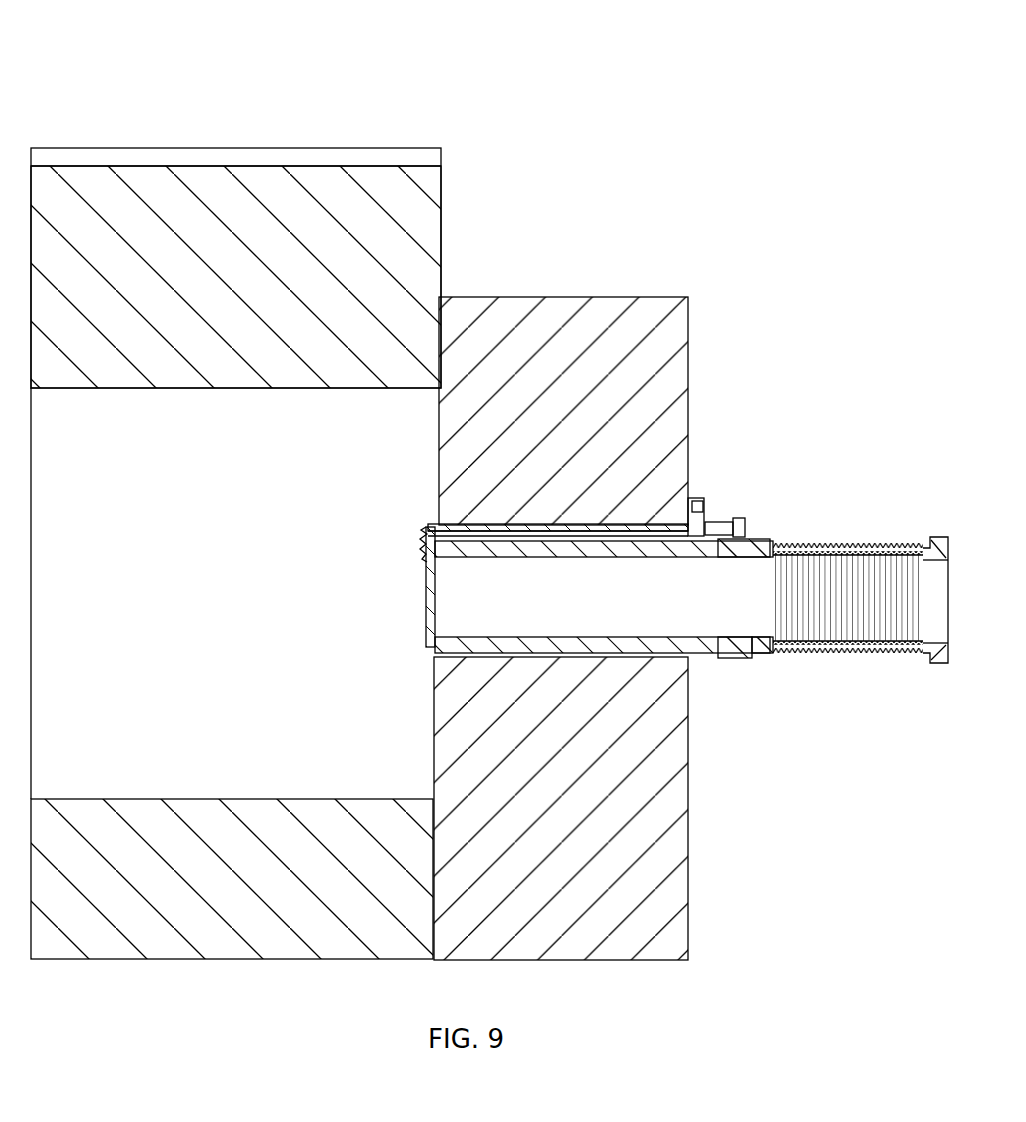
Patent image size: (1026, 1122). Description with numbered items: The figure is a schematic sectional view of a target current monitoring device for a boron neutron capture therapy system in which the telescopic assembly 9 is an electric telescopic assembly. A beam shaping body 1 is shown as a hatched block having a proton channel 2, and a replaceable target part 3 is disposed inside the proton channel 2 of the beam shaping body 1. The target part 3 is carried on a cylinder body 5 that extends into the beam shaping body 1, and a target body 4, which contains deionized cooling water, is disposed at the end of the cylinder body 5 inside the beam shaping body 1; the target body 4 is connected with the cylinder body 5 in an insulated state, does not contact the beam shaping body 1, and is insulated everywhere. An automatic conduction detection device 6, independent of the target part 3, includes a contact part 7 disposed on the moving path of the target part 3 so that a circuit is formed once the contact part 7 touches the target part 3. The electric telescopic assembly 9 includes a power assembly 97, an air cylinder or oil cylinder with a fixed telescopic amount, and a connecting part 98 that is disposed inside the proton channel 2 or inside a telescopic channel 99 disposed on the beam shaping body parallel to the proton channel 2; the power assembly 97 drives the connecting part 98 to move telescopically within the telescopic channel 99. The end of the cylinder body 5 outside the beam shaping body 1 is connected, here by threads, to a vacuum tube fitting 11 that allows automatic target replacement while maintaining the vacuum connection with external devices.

The beam shaping body 1 is at (340, 166).
The proton channel 2 is at (647, 660).
The target part 3 is at (708, 660).
The target body 4 is at (428, 592).
The cylinder body 5 is at (428, 650).
The automatic conduction detection device 6 is at (561, 628).
The contact part 7 is at (424, 552).
The telescopic assembly 9 is at (769, 442).
The vacuum tube fitting 11 is at (849, 546).
The power assembly 97 is at (745, 521).
The connecting part 98 is at (705, 508).
The telescopic channel 99 is at (628, 522).